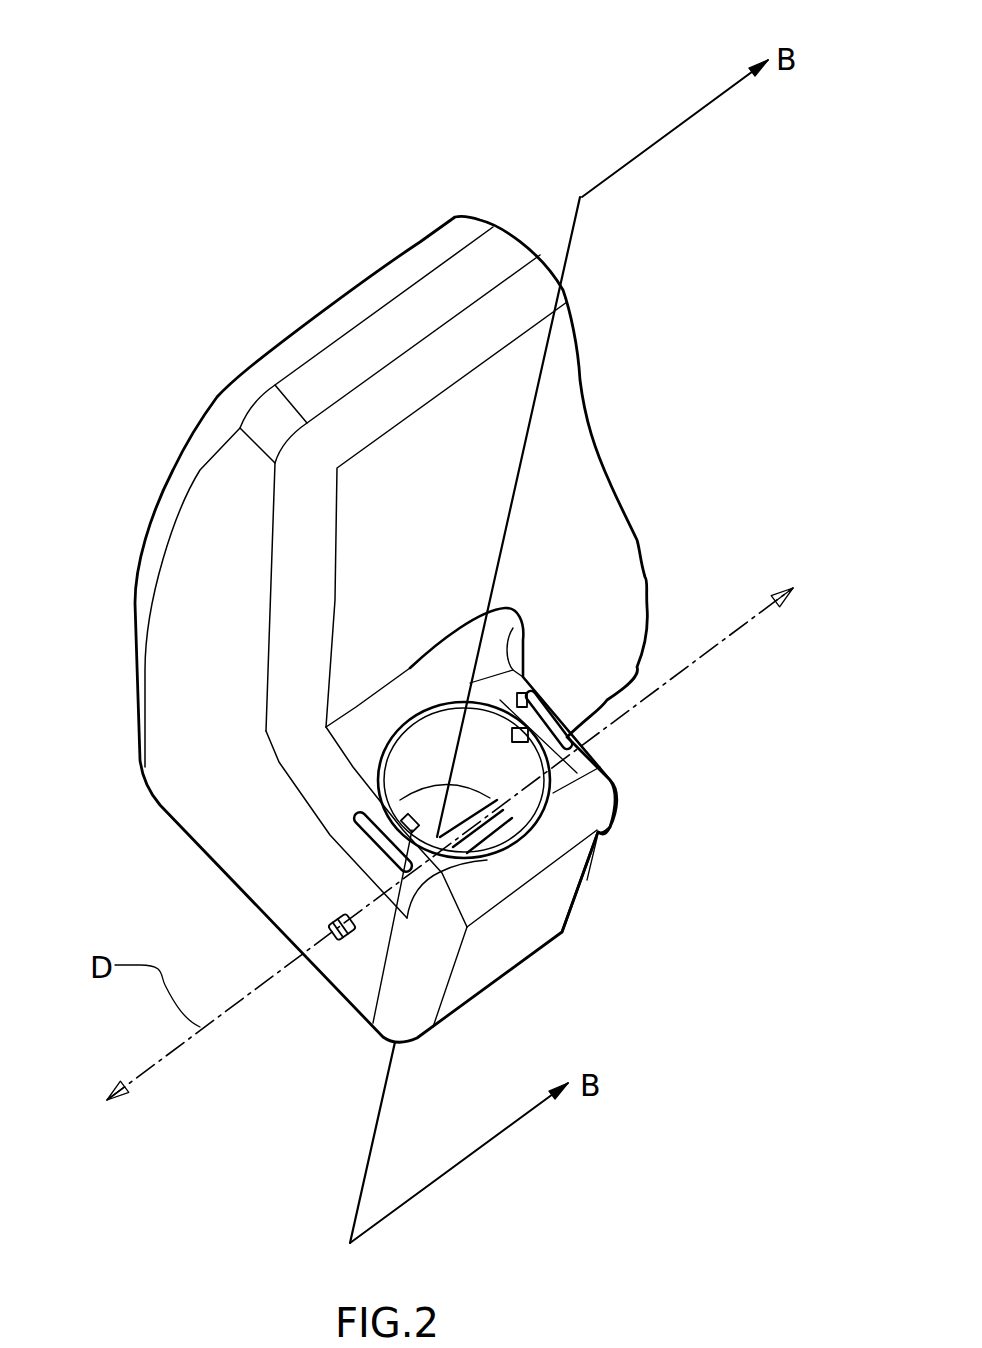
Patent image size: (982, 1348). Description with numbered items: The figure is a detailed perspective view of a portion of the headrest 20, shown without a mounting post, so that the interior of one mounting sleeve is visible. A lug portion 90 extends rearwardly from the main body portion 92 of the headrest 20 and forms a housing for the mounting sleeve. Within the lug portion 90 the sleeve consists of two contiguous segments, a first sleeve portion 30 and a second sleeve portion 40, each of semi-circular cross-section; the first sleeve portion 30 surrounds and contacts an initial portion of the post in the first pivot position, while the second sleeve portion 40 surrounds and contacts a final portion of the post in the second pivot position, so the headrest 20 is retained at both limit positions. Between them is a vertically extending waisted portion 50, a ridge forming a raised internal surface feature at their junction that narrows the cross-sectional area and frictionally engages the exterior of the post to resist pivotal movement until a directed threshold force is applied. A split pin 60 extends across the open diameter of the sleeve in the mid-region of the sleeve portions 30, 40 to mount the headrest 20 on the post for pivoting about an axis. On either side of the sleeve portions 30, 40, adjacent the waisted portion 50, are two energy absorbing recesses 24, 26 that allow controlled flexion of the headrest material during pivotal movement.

The headrest 20 is at (287, 212).
The energy absorbing recess 24 is at (307, 768).
The energy absorbing recess 26 is at (387, 838).
The first sleeve portion 30 is at (423, 737).
The second sleeve portion 40 is at (518, 817).
The waisted portion 50 is at (607, 827).
The split pin 60 is at (353, 947).
The lug portion 90 is at (493, 948).
The main body portion 92 is at (614, 482).